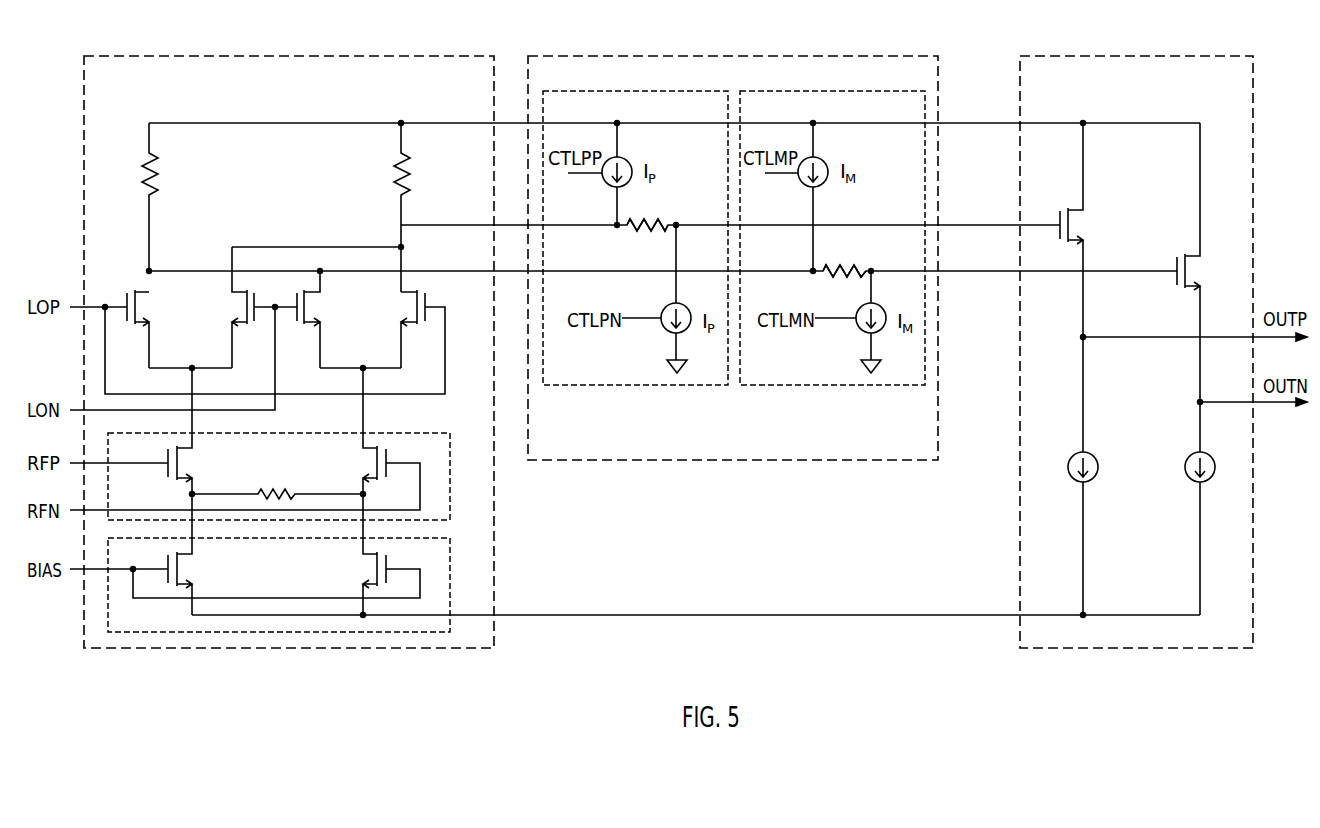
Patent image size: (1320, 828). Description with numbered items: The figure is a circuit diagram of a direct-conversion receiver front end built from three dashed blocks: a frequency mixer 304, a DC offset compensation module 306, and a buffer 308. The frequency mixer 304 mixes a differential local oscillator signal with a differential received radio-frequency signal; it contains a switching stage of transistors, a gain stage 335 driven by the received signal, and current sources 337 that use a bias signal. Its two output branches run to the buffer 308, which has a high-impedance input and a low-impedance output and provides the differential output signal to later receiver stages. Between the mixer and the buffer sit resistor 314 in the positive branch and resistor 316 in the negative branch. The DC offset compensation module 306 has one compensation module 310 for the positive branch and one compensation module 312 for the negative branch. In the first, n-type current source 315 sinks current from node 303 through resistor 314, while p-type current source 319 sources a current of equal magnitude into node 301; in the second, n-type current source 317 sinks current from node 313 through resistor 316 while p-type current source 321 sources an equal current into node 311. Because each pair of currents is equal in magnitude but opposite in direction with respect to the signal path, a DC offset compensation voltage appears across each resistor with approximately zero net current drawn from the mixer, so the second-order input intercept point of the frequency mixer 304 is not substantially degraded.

The frequency mixer 304 is at (130, 91).
The DC offset compensation module 306 is at (575, 85).
The buffer 308 is at (1067, 85).
The compensation module 310 is at (582, 117).
The compensation module 312 is at (787, 117).
The gain stage 335 is at (148, 456).
The current sources 337 is at (148, 562).
The node 301 is at (613, 223).
The node 303 is at (678, 223).
The node 311 is at (811, 269).
The node 313 is at (876, 269).
The resistor 314 is at (647, 221).
The resistor 316 is at (841, 268).
The current source 315 is at (664, 306).
The current source 317 is at (859, 306).
The current source 319 is at (629, 161).
The current source 321 is at (826, 161).